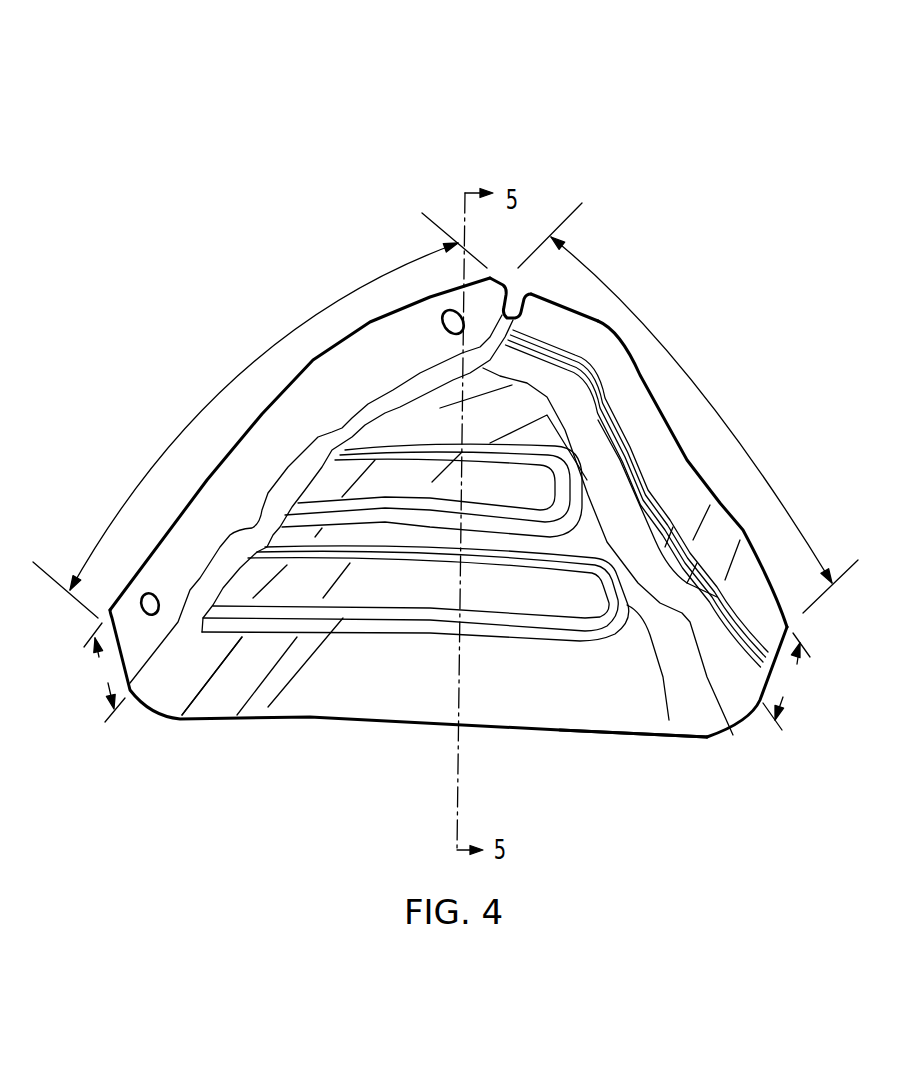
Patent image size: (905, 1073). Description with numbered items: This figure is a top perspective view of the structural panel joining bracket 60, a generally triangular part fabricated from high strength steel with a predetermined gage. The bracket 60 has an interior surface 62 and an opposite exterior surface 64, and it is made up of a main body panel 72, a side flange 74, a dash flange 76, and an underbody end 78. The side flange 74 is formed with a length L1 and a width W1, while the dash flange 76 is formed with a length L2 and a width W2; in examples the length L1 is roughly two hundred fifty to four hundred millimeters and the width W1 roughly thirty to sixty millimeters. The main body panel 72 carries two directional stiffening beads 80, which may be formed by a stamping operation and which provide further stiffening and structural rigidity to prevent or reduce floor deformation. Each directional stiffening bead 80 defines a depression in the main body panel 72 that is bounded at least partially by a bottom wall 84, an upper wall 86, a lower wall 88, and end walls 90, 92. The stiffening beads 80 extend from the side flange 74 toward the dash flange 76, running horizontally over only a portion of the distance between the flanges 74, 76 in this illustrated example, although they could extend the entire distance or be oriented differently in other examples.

The structural panel joining bracket 60 is at (448, 430).
The interior surface 62 is at (606, 716).
The exterior surface 64 is at (325, 722).
The main body panel 72 is at (520, 410).
The side flange 74 is at (313, 360).
The dash flange 76 is at (707, 453).
The underbody end 78 is at (523, 745).
The directional stiffening bead 80 is at (450, 440).
The bottom wall 84 is at (500, 592).
The upper wall 86 is at (573, 560).
The lower wall 88 is at (268, 707).
The end wall 90 is at (227, 572).
The end wall 92 is at (669, 722).
The length of side flange L1 is at (260, 415).
The length of dash flange L2 is at (688, 408).
The width of side flange W1 is at (104, 672).
The width of dash flange W2 is at (786, 681).